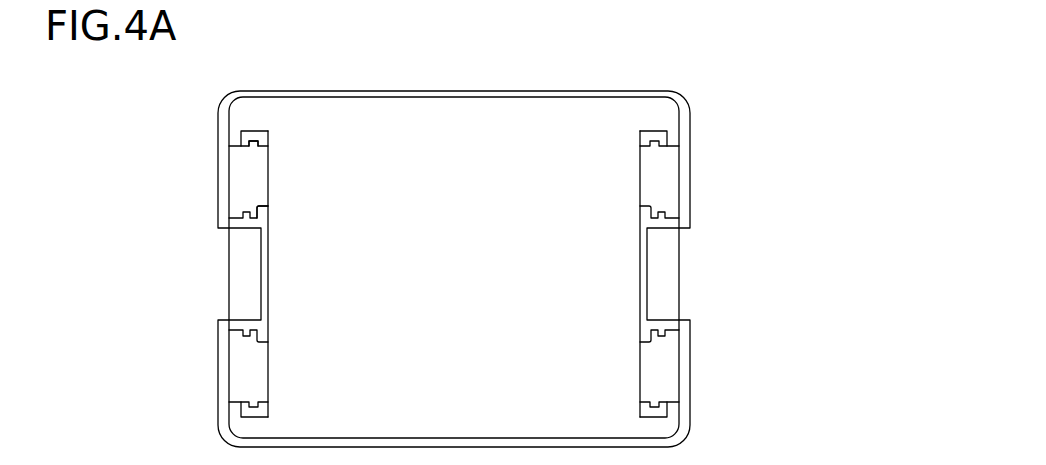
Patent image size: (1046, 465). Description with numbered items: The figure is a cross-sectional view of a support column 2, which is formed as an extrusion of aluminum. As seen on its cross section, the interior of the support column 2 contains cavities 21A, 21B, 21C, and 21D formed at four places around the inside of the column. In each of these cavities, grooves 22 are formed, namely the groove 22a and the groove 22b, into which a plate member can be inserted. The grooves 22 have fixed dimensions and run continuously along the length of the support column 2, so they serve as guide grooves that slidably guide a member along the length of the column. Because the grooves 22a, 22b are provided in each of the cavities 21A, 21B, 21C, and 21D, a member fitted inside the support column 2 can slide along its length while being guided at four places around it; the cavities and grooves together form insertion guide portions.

The support column 2 is at (516, 90).
The cavity 21A is at (248, 190).
The cavity 21B is at (248, 363).
The cavity 21C is at (663, 190).
The cavity 21D is at (663, 363).
The grooves 22 is at (346, 180).
The groove 22a is at (254, 159).
The groove 22b is at (317, 212).